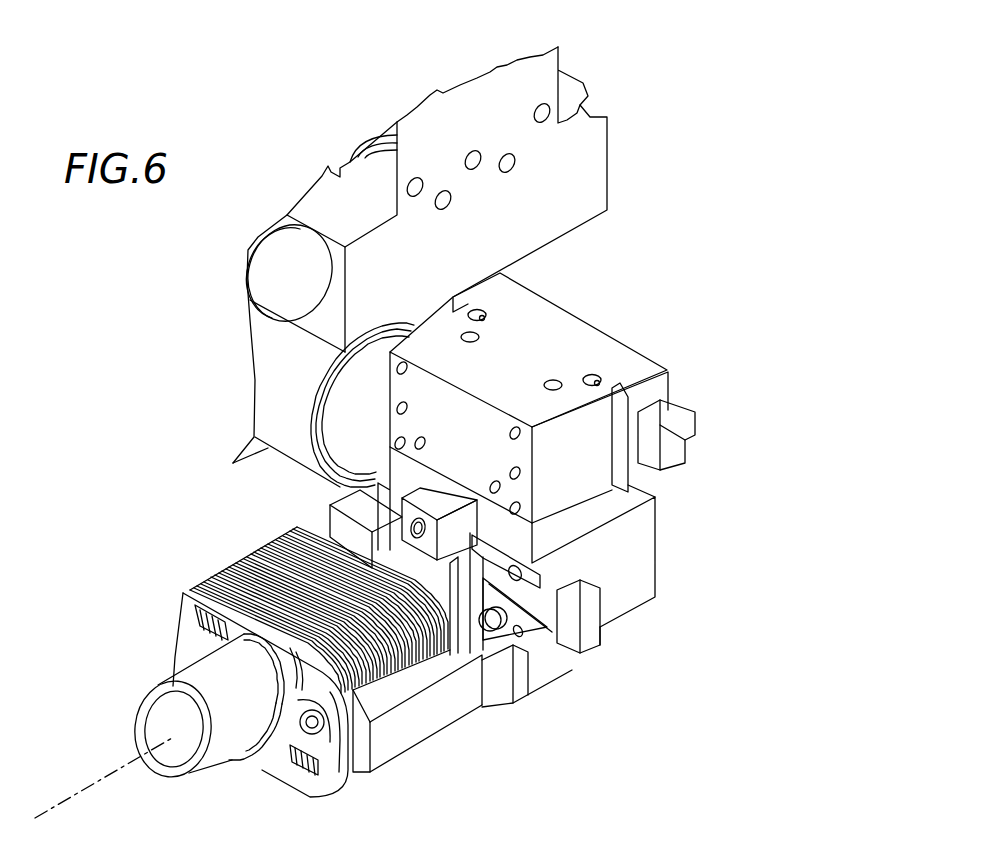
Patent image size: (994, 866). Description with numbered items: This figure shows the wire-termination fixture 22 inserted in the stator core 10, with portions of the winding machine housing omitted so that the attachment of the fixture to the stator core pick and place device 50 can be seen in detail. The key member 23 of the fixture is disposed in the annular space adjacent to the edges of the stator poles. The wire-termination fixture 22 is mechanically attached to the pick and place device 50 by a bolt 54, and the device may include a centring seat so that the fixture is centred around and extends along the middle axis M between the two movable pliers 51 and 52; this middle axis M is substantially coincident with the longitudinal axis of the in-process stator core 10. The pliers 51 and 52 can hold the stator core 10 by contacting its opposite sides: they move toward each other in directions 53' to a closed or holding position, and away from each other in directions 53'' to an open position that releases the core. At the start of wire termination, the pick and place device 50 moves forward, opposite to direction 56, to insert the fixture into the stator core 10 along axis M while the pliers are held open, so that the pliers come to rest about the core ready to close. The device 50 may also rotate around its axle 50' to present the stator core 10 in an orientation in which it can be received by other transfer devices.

The stator core 10 is at (270, 570).
The wire-termination fixture 22 is at (250, 753).
The key member 23 is at (277, 765).
The stator core pick and place device 50 is at (505, 267).
The axle 50' is at (364, 377).
The plier 51 is at (388, 737).
The plier 52 is at (182, 600).
The closing directions 53' is at (444, 584).
The opening directions 53'' is at (456, 578).
The bolt 54 is at (425, 497).
The direction 56 is at (813, 472).
The middle axis M is at (93, 780).